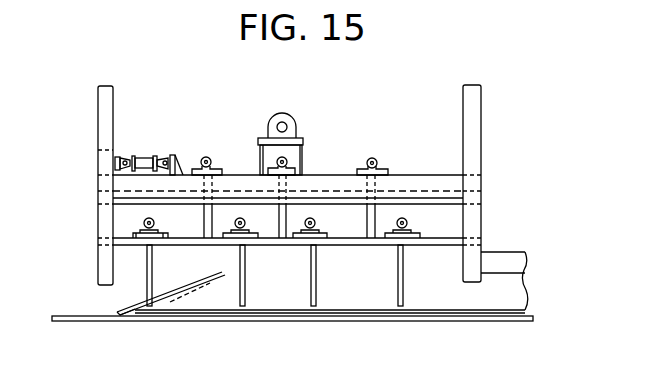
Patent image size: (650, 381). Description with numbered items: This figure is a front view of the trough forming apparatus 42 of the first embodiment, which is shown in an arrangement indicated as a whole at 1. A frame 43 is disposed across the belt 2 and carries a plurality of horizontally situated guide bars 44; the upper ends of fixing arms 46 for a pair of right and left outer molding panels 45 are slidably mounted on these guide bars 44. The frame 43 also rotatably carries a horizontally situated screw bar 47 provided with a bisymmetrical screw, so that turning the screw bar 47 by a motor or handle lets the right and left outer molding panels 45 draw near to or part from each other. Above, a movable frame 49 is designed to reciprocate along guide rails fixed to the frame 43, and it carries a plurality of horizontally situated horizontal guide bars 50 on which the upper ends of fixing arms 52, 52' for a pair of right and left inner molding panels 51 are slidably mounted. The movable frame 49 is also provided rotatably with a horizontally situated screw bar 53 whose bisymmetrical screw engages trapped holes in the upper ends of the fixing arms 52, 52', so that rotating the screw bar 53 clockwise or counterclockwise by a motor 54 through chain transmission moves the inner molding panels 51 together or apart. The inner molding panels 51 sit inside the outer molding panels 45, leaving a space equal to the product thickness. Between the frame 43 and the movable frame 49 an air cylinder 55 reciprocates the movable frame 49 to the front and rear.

The apparatus 1 is at (78, 328).
The belt 2 is at (498, 321).
The trough forming apparatus 42 is at (481, 118).
The frame 43 is at (98, 119).
The guide bars 44 is at (155, 222).
The outer molding panels 45 is at (367, 293).
The fixing arms 46 is at (146, 288).
The screw bar 47 is at (320, 246).
The movable frame 49 is at (333, 188).
The horizontal guide bars 50 is at (205, 157).
The inner molding panels 51 is at (271, 263).
The fixing arm 52 is at (415, 224).
The fixing arm 52' is at (324, 258).
The screw bar 53 is at (277, 162).
The motor 54 is at (283, 113).
The air cylinder 55 is at (145, 157).